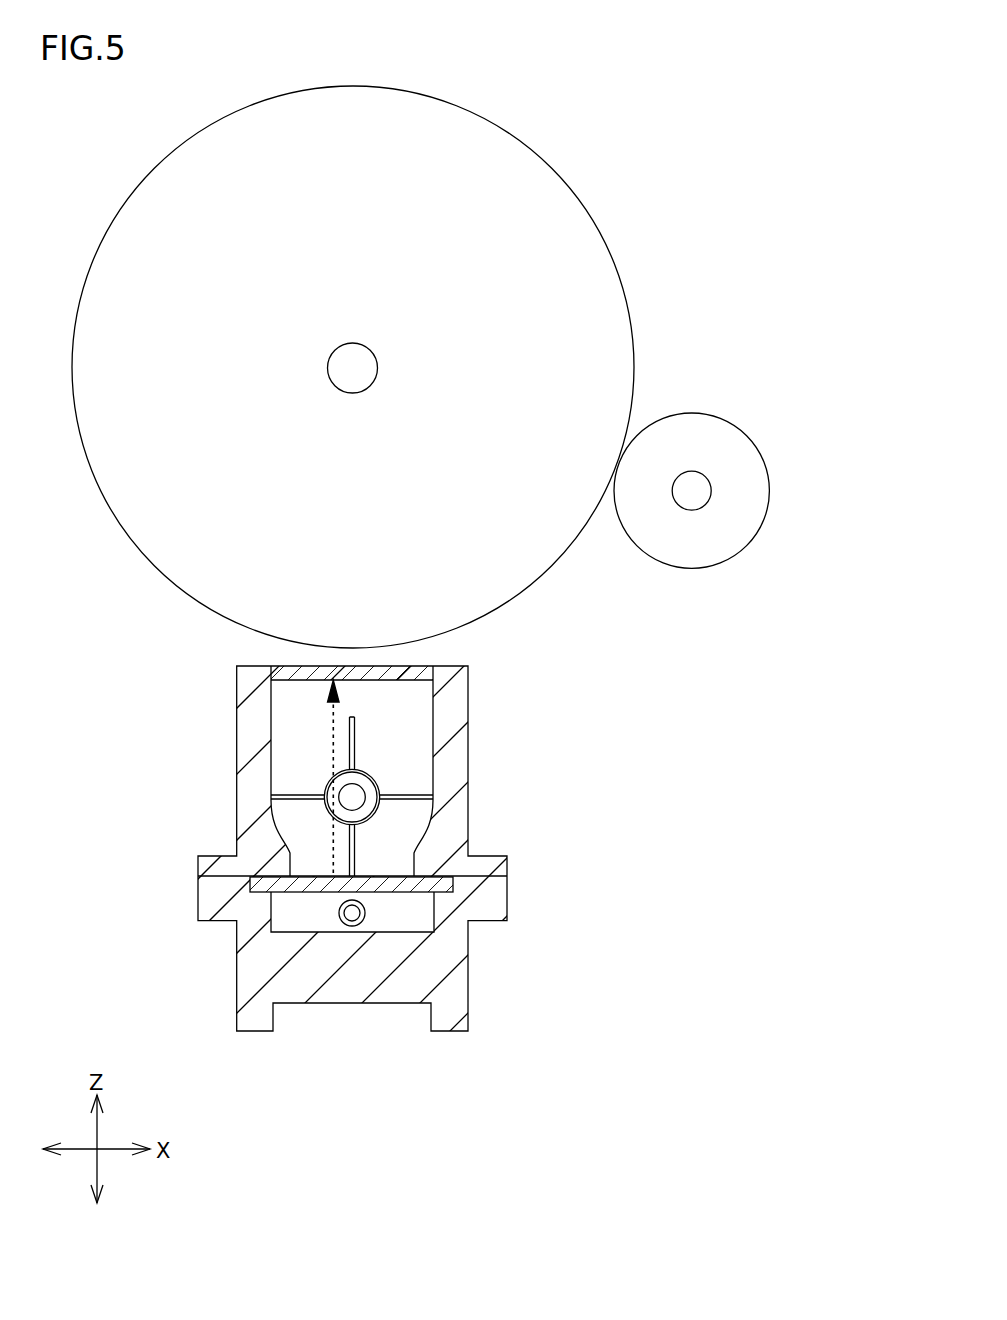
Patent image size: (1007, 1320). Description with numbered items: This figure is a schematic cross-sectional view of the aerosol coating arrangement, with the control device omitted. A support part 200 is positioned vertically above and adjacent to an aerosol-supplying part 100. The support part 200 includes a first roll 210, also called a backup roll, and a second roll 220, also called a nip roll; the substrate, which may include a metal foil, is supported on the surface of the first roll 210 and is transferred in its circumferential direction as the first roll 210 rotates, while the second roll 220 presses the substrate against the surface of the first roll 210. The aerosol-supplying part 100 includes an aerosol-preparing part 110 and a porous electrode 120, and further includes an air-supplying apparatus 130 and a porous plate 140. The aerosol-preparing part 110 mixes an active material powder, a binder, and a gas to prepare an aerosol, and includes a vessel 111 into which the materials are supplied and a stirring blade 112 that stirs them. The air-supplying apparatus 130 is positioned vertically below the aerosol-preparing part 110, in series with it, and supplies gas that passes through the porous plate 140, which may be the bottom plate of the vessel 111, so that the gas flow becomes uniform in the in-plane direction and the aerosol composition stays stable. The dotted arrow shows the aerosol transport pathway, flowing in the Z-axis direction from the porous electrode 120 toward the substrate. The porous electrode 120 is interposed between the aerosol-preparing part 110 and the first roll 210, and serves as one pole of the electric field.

The aerosol-supplying part 100 is at (503, 660).
The aerosol-preparing part 110 is at (503, 660).
The vessel 111 is at (465, 740).
The stirring blade 112 is at (381, 800).
The porous electrode 120 is at (408, 667).
The air-supplying apparatus 130 is at (486, 931).
The porous plate 140 is at (412, 893).
The support part 200 is at (468, 367).
The first roll 210 is at (608, 248).
The second roll 220 is at (708, 452).